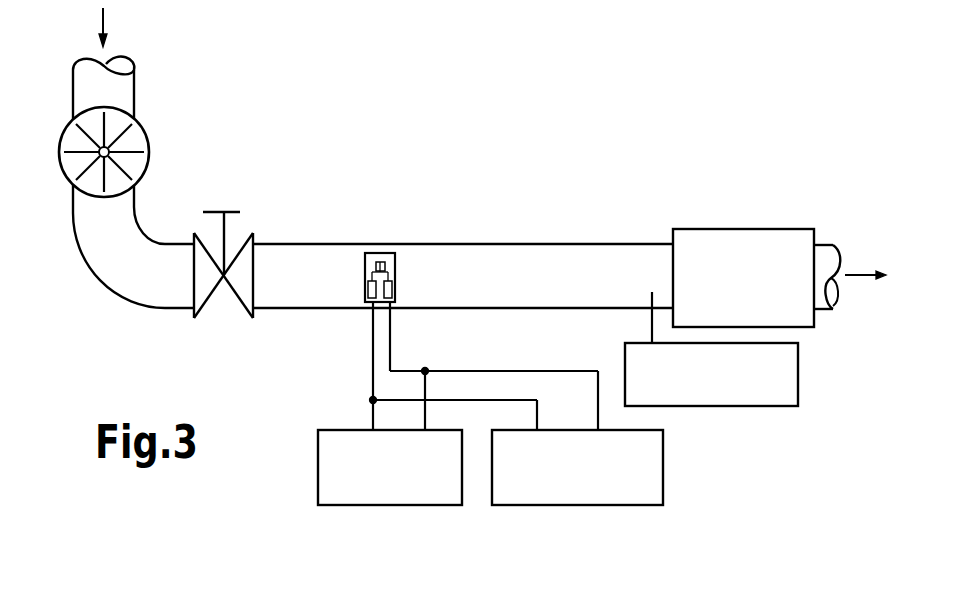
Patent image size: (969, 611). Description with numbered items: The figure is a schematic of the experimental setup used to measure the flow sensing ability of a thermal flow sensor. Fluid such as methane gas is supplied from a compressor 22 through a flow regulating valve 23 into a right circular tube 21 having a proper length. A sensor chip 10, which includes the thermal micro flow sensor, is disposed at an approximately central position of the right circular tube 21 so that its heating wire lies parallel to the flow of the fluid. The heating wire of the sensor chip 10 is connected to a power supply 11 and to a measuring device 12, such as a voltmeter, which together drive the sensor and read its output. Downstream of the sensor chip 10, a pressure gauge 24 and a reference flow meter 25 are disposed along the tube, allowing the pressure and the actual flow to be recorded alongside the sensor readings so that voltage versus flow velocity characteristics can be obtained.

The sensor chip 10 is at (395, 268).
The power supply 11 is at (380, 505).
The measuring device 12 is at (567, 505).
The right circular tube 21 is at (462, 308).
The compressor 22 is at (140, 127).
The flow regulating valve 23 is at (227, 218).
The pressure gauge 24 is at (733, 406).
The reference flow meter 25 is at (742, 229).